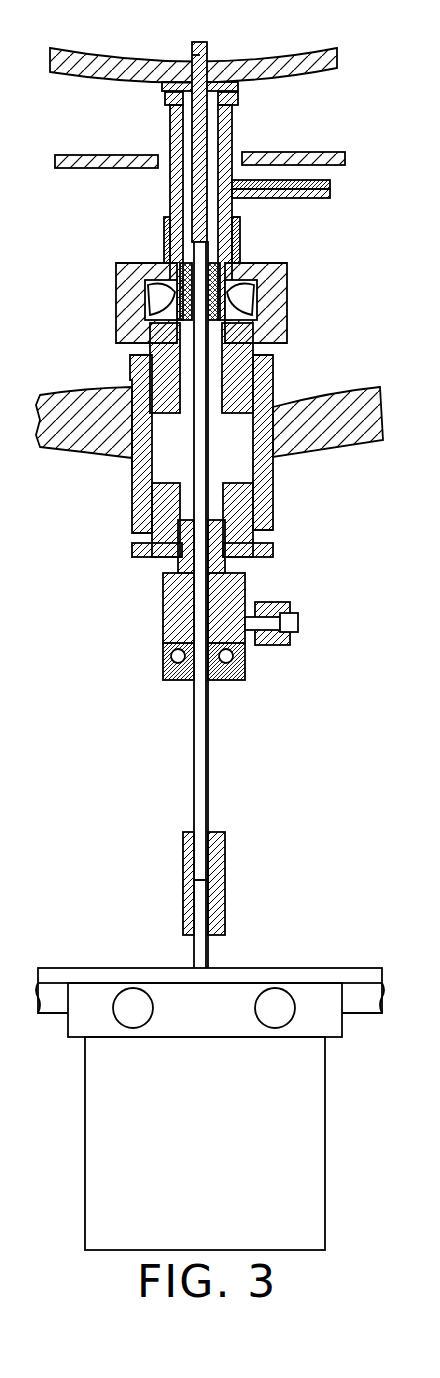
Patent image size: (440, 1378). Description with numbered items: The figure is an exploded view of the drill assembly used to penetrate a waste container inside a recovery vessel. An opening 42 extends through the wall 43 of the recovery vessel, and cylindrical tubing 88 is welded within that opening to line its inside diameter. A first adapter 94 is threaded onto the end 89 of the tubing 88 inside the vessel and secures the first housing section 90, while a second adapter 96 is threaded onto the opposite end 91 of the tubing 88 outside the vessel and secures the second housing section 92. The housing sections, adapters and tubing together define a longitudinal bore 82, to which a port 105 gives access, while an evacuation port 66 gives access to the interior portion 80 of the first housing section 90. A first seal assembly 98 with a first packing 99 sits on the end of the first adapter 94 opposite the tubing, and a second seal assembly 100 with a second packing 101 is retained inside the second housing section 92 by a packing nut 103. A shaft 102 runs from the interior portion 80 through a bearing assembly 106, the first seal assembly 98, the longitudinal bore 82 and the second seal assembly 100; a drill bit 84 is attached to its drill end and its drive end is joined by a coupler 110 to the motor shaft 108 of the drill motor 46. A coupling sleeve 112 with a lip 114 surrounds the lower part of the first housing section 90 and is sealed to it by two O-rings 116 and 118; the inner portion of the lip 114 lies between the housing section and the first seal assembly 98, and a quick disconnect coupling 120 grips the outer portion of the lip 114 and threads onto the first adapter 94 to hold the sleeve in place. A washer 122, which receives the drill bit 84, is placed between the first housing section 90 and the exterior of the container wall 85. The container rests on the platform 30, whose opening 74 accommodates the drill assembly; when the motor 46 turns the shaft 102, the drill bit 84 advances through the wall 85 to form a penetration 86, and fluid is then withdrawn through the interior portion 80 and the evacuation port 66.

The drill bit 84 is at (200, 42).
The penetration 86 is at (194, 55).
The wall 85 is at (300, 50).
The washer 122 is at (240, 86).
The interior portion 80 is at (166, 104).
The first housing section 90 is at (233, 130).
The platform 30 is at (72, 154).
The opening 74 is at (162, 152).
The evacuation port 66 is at (331, 183).
The O-ring 116 is at (164, 226).
The lip 114 is at (180, 265).
The coupling sleeve 112 is at (241, 220).
The bearing assembly 106 is at (220, 262).
The O-ring 118 is at (240, 250).
The first seal assembly 98 is at (152, 298).
The first packing 99 is at (248, 298).
The quick disconnect coupling 120 is at (117, 325).
The first adapter 94 is at (273, 362).
The wall 43 is at (356, 397).
The end 89 is at (130, 378).
The opening 42 is at (131, 465).
The longitudinal bore 82 is at (245, 476).
The cylindrical tubing 88 is at (132, 523).
The second adapter 96 is at (274, 549).
The end 91 is at (130, 545).
The second housing section 92 is at (163, 607).
The second packing 101 is at (163, 650).
The port 105 is at (298, 622).
The second seal assembly 100 is at (245, 652).
The packing nut 103 is at (226, 681).
The shaft 102 is at (194, 752).
The coupler 110 is at (225, 857).
The motor shaft 108 is at (208, 950).
The drill motor 46 is at (216, 1154).